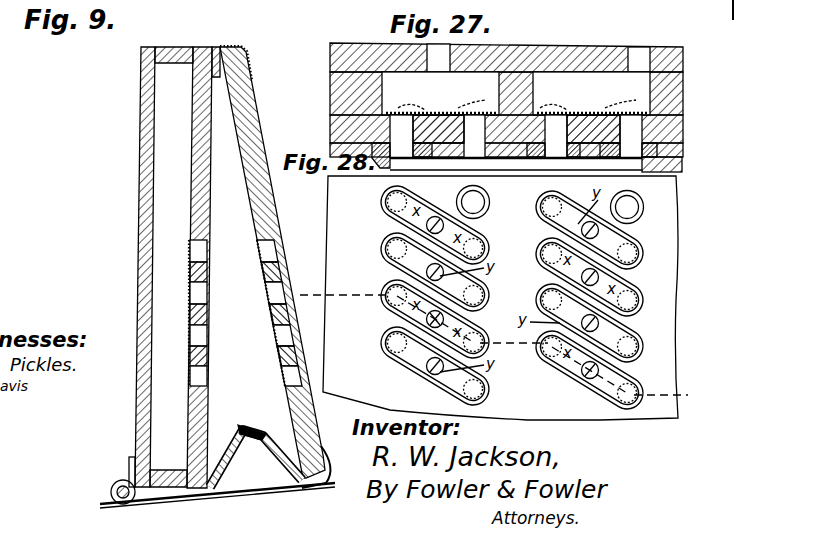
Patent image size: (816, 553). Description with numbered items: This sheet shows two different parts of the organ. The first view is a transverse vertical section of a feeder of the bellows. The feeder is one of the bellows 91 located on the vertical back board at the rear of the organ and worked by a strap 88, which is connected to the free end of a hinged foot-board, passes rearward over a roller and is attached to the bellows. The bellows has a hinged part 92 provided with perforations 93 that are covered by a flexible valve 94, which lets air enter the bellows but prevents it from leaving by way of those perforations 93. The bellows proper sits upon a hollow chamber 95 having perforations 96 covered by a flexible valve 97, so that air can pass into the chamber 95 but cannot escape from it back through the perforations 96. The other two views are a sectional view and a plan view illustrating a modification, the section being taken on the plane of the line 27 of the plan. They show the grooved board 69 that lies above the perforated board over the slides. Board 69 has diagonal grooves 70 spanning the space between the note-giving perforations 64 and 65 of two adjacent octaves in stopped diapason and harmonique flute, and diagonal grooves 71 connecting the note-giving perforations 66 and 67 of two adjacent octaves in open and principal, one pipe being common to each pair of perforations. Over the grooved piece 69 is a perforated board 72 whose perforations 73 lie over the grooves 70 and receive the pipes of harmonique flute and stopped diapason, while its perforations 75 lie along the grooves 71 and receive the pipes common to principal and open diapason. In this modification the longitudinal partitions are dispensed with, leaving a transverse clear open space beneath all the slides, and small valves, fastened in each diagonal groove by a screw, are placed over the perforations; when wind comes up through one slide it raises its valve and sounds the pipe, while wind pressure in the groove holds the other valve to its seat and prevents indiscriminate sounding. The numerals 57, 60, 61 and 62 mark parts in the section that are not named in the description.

In FIG. 9, the strap 88 is at (217, 469).
In FIG. 9, the bellows 91 is at (174, 253).
In FIG. 9, the hinged part 92 is at (246, 118).
In FIG. 9, the perforations 93 is at (273, 254).
In FIG. 9, the flexible valve 94 is at (283, 288).
In FIG. 9, the hollow chamber 95 is at (188, 267).
In FIG. 9, the perforations 96 is at (220, 257).
In FIG. 9, the flexible valve 97 is at (191, 308).
In FIG. 27, the bar 57 is at (506, 142).
In FIG. 27, the block 60 is at (438, 131).
In FIG. 27, the block 61 is at (593, 131).
In FIG. 27, the plate 62 is at (672, 141).
In FIG. 27, the grooved board 69 is at (506, 93).
In FIG. 28, the grooved board 69 is at (500, 298).
In FIG. 27, the diagonal grooves 70 is at (440, 93).
In FIG. 27, the diagonal grooves 71 is at (591, 93).
In FIG. 27, the perforated board 72 is at (506, 48).
In FIG. 27, the perforations 73 is at (439, 58).
In FIG. 27, the perforations 75 is at (640, 60).
In FIG. 28, the note-giving perforation 64 is at (397, 273).
In FIG. 28, the note-giving perforation 65 is at (473, 319).
In FIG. 28, the note-giving perforation 66 is at (552, 277).
In FIG. 28, the note-giving perforation 67 is at (627, 323).
In FIG. 28, the section line 27 is at (504, 347).